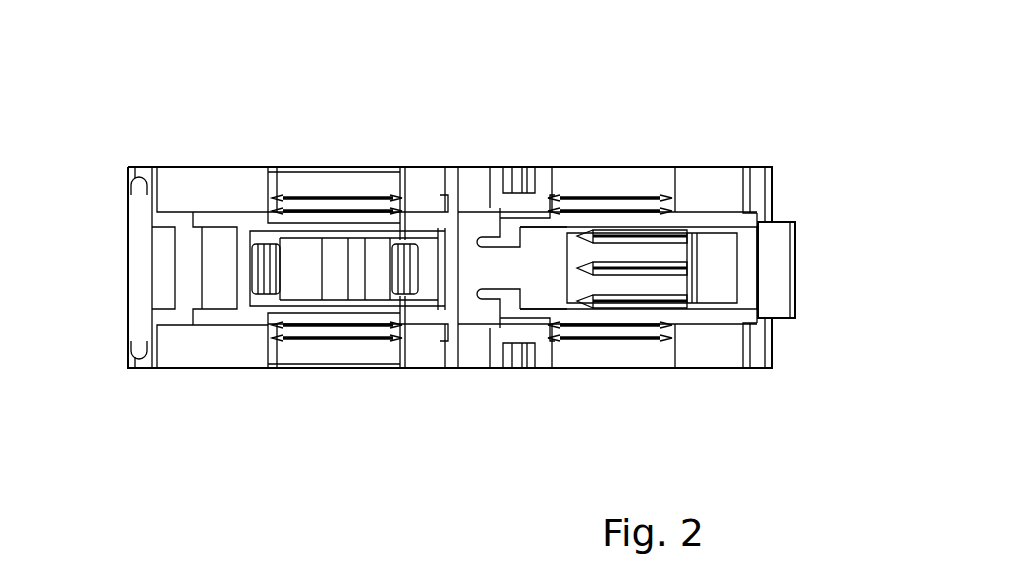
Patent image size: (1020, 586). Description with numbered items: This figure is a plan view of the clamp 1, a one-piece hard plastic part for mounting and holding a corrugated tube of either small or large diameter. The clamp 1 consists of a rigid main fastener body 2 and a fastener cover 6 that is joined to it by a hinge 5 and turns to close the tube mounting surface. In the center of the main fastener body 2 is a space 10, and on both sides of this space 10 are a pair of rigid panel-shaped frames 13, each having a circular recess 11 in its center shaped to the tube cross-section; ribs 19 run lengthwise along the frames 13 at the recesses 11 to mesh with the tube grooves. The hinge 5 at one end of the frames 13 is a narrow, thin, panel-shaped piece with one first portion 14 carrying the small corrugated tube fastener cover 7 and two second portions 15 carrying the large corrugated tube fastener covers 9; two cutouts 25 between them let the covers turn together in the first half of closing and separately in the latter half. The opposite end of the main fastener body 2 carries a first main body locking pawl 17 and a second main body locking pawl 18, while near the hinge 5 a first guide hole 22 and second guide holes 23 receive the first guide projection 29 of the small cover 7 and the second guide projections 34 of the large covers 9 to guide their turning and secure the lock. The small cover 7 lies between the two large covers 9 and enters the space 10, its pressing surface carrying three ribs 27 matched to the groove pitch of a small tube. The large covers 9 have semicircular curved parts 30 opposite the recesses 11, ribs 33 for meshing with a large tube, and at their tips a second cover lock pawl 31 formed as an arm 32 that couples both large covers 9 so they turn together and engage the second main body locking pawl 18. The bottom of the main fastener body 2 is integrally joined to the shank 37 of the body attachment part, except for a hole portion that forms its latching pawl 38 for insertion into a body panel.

The clamp 1 is at (722, 70).
The main fastener body 2 is at (129, 301).
The hinge 5 is at (443, 112).
The fastener cover 6 is at (853, 203).
The small corrugated tube fastener cover 7 is at (728, 266).
The large corrugated tube fastener covers 9 is at (758, 200).
The space 10 is at (250, 219).
The circular recesses 11 is at (289, 180).
The frames 13 is at (173, 180).
The first portion 14 is at (497, 168).
The second portions 15 is at (468, 170).
The first main body locking pawl 17 is at (223, 242).
The second main body locking pawl 18 is at (160, 263).
The ribs 19 is at (314, 180).
The first guide hole 22 is at (400, 238).
The second guide holes 23 is at (420, 167).
The cutouts 25 is at (477, 297).
The ribs 27 is at (680, 236).
The first guide projection 29 is at (528, 248).
The semicircular curved parts 30 is at (606, 167).
The second cover lock pawl 31 is at (748, 368).
The arm 32 is at (748, 168).
The ribs 33 is at (648, 168).
The second guide projections 34 is at (521, 168).
The shank 37 is at (342, 277).
The latching pawl 38 is at (258, 288).